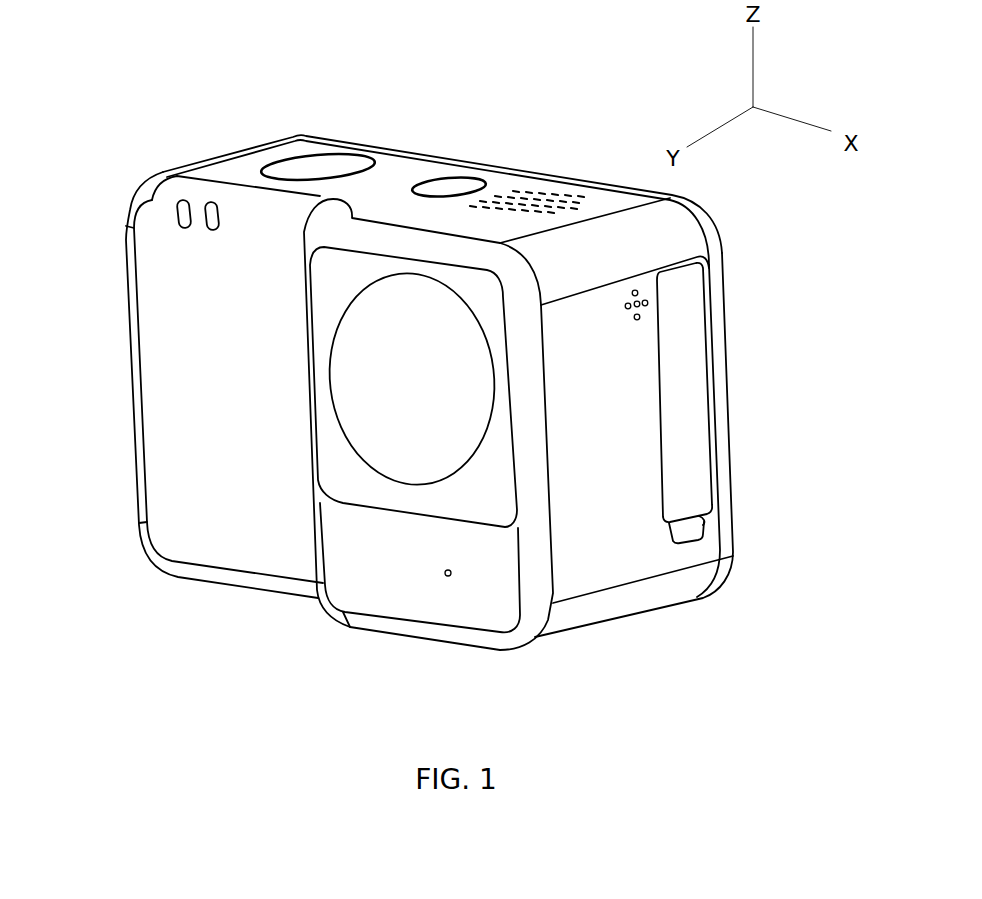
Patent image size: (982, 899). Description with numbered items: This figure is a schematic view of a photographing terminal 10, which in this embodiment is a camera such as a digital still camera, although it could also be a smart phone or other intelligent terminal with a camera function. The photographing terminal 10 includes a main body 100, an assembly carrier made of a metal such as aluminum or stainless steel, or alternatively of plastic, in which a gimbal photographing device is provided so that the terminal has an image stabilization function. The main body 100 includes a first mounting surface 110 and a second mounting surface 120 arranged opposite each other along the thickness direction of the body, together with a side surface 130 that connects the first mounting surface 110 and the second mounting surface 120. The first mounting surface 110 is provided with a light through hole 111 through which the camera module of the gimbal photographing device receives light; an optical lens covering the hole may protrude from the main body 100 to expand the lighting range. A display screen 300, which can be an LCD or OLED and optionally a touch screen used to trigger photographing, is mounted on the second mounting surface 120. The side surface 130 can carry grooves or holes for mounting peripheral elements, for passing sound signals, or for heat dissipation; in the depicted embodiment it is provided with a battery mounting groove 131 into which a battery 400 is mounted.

The photographing terminal 10 is at (124, 154).
The main body 100 is at (182, 428).
The first mounting surface 110 is at (363, 550).
The light through hole 111 is at (482, 425).
The second mounting surface 120 is at (730, 381).
The side surface 130 is at (375, 207).
The battery mounting groove 131 is at (690, 533).
The display screen 300 is at (722, 232).
The battery 400 is at (684, 437).